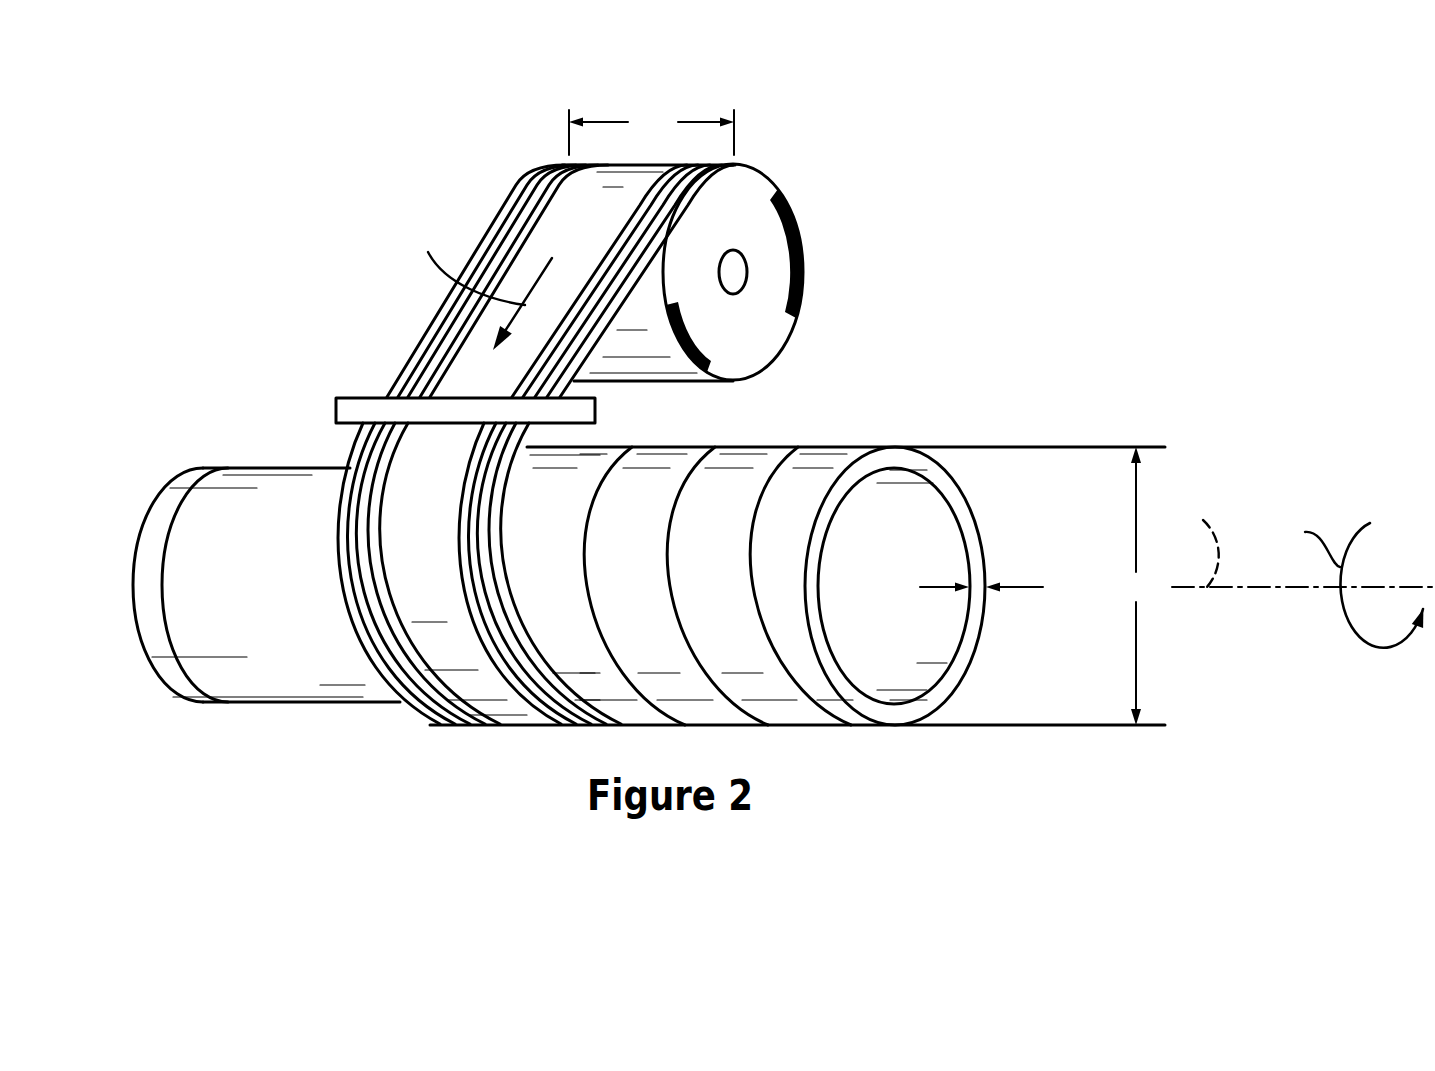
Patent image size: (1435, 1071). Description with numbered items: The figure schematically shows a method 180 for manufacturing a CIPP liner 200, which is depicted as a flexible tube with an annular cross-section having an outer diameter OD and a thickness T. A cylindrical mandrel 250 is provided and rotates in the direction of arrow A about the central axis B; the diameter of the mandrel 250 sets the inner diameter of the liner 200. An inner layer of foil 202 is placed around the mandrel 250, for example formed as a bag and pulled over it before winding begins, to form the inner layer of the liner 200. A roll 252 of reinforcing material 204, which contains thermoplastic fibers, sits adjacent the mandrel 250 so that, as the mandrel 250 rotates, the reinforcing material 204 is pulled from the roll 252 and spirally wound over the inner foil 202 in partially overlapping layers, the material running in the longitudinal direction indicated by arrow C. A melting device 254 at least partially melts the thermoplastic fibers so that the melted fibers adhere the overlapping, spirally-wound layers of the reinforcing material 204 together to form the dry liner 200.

The method 180 is at (140, 323).
The CIPP liner 200 is at (860, 418).
The inner layer of foil 202 is at (317, 667).
The reinforcing material 204 is at (565, 185).
The mandrel 250 is at (163, 523).
The roll 252 is at (763, 205).
The melting device 254 is at (362, 405).